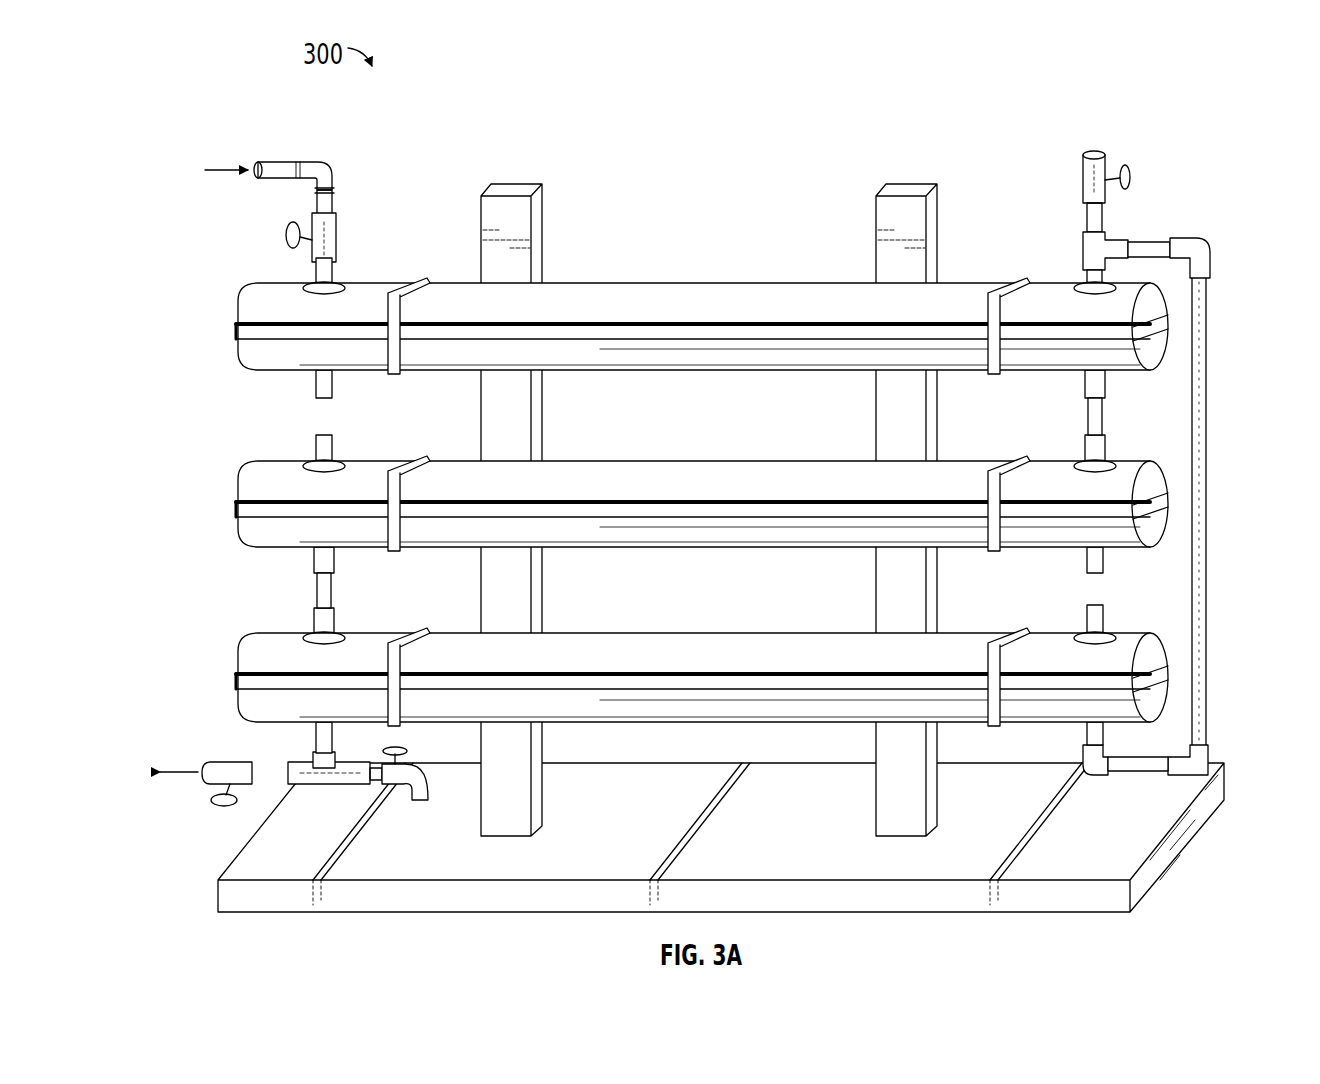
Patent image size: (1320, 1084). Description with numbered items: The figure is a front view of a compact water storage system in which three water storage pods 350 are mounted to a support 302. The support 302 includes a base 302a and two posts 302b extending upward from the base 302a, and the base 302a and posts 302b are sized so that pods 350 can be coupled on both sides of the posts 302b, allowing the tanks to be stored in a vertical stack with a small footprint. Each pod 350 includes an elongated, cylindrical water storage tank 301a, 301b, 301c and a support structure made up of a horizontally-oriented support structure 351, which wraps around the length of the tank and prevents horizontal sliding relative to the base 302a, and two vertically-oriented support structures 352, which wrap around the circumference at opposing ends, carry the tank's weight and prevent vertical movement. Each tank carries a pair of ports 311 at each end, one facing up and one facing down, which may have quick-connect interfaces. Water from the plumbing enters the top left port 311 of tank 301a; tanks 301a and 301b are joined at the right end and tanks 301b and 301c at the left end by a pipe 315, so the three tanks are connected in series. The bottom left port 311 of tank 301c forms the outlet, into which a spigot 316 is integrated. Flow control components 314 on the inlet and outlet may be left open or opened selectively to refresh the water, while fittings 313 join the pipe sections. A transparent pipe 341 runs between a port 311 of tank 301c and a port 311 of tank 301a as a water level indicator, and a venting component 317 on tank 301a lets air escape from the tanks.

The water storage tank 301a is at (660, 283).
The water storage tank 301b is at (660, 461).
The water storage tank 301c is at (655, 633).
The support 302 is at (696, 847).
The base 302a is at (1182, 858).
The posts 302b is at (542, 808).
The ports 311 is at (314, 283).
The pipe fittings 313 is at (330, 172).
The flow control components 314 is at (338, 237).
The pipe 315 is at (1150, 773).
The spigot 316 is at (415, 803).
The venting component 317 is at (1082, 190).
The transparent pipe 341 is at (1208, 605).
The water storage pods 350 is at (655, 470).
The horizontally-oriented support structure 351 is at (786, 324).
The vertically-oriented support structures 352 is at (418, 280).